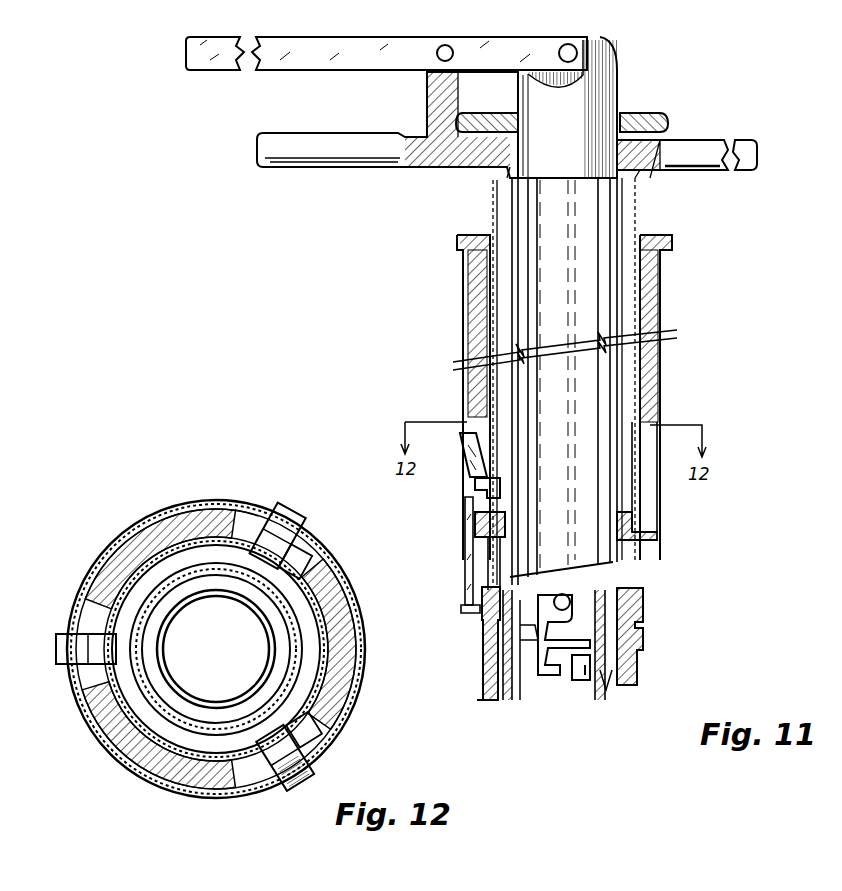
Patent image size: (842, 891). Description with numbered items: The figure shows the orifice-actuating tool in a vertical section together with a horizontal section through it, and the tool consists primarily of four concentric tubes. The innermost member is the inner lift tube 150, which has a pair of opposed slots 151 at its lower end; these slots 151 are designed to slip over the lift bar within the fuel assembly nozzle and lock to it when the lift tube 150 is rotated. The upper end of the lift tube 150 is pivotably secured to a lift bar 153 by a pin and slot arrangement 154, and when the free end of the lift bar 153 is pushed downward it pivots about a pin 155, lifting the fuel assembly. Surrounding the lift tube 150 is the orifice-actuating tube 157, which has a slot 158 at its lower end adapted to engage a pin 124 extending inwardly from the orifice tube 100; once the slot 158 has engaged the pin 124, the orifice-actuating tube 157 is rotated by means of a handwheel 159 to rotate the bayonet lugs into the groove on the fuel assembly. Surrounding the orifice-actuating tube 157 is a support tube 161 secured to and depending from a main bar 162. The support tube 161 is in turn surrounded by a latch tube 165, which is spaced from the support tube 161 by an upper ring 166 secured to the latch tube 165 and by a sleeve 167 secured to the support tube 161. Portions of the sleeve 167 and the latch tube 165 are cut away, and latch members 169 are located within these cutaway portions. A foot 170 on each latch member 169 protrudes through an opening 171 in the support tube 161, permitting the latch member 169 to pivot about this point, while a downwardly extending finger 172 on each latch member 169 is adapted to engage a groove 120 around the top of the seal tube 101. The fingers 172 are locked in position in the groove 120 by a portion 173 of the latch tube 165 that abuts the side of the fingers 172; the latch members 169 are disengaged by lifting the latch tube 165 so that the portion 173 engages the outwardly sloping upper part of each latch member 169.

In FIG. 11, the lift bar 153 is at (352, 38).
In FIG. 11, the pin and slot arrangement 154 is at (577, 46).
In FIG. 11, the pin 155 is at (452, 44).
In FIG. 11, the inner lift tube 150 is at (617, 86).
In FIG. 12, the inner lift tube 150 is at (205, 708).
In FIG. 11, the handwheel 159 is at (668, 124).
In FIG. 11, the main bar 162 is at (708, 170).
In FIG. 11, the upper ring 166 is at (674, 246).
In FIG. 11, the latch tube 165 is at (662, 408).
In FIG. 12, the latch tube 165 is at (135, 525).
In FIG. 11, the sleeve 167 is at (662, 380).
In FIG. 12, the sleeve 167 is at (355, 612).
In FIG. 11, the latch member 169 is at (462, 436).
In FIG. 12, the latch member 169 is at (305, 528).
In FIG. 11, the foot 170 is at (475, 488).
In FIG. 12, the foot 170 is at (340, 712).
In FIG. 11, the opening 171 is at (478, 503).
In FIG. 11, the portion of latch tube 173 is at (467, 515).
In FIG. 12, the portion of latch tube 173 is at (252, 505).
In FIG. 11, the downwardly extending finger 172 is at (465, 607).
In FIG. 11, the support tube 161 is at (613, 553).
In FIG. 12, the support tube 161 is at (98, 737).
In FIG. 11, the orifice-actuating tube 157 is at (613, 562).
In FIG. 12, the orifice-actuating tube 157 is at (275, 622).
In FIG. 11, the pin 124 is at (562, 594).
In FIG. 11, the groove 120 is at (643, 612).
In FIG. 11, the orifice tube 100 is at (643, 645).
In FIG. 11, the seal tube 101 is at (483, 665).
In FIG. 11, the slot 158 is at (540, 660).
In FIG. 11, the opposed slots 151 is at (578, 672).